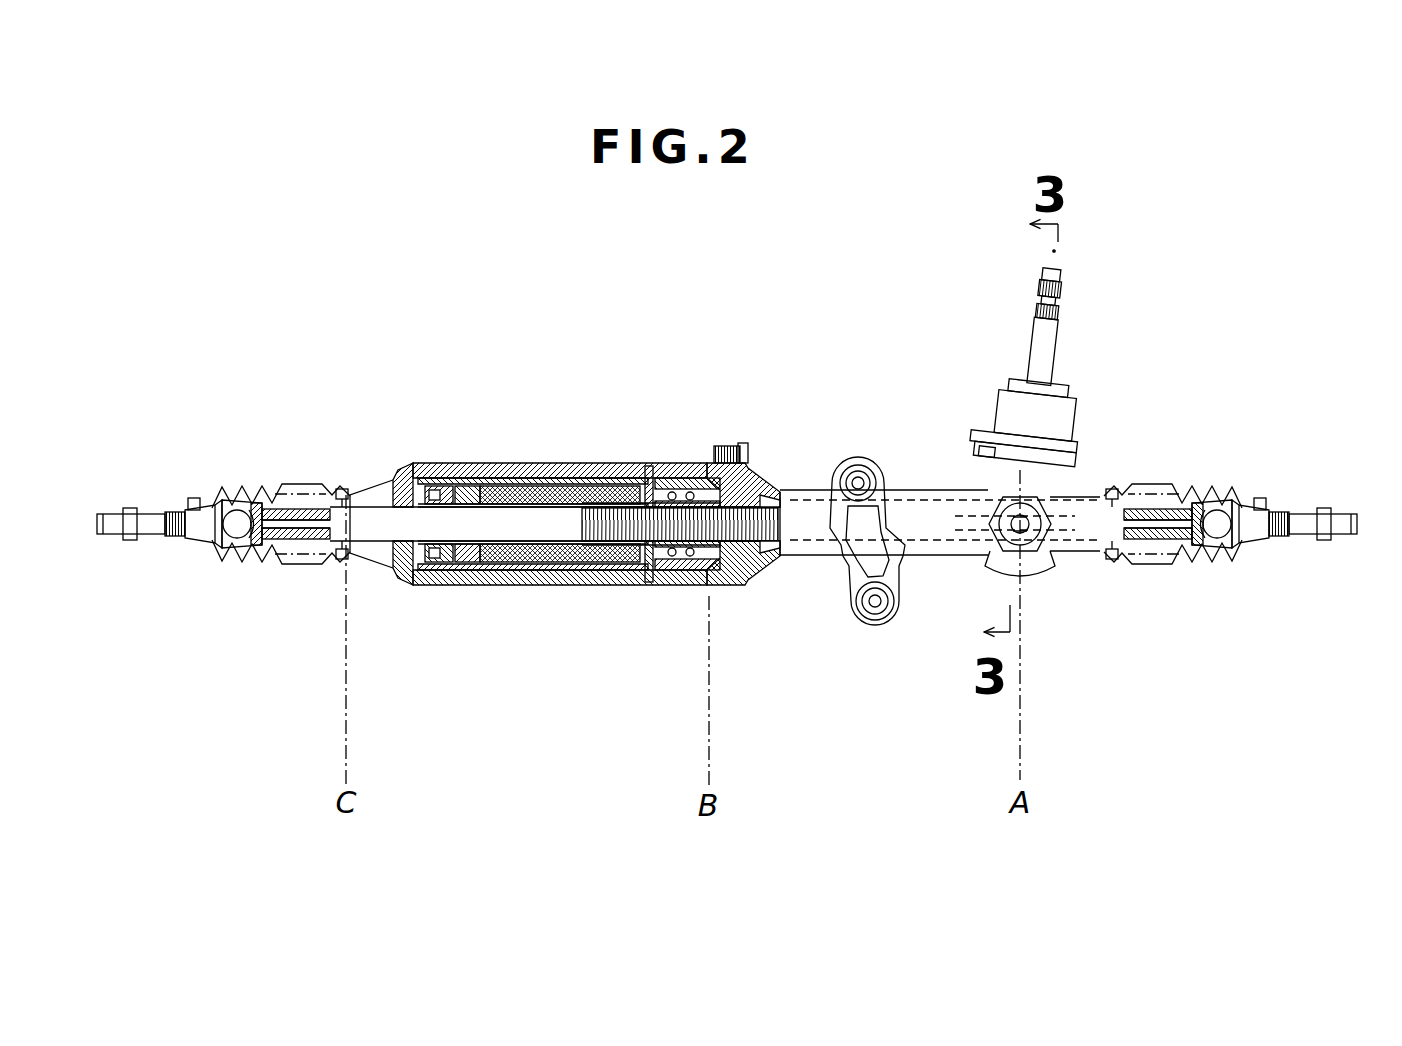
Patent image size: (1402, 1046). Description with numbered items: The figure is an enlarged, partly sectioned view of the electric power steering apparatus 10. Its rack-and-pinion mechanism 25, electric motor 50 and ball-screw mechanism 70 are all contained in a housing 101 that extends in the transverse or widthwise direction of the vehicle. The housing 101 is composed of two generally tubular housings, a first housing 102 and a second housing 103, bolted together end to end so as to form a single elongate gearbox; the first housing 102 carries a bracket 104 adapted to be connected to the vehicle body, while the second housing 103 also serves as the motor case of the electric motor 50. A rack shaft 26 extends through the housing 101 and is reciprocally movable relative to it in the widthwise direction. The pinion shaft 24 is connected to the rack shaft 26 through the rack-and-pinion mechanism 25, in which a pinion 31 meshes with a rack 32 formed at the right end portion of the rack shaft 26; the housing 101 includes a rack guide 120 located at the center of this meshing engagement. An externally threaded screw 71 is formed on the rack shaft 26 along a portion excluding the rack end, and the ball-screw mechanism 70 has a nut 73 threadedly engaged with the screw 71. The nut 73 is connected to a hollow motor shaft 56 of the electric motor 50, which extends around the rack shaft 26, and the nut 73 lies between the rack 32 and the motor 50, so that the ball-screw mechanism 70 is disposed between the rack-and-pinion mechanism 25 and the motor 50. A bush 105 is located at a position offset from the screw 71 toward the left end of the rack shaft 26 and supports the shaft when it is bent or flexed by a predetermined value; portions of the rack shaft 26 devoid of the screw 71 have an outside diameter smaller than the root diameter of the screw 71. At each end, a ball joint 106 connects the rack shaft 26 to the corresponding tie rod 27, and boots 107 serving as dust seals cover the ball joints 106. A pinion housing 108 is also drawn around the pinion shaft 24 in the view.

The electric power steering apparatus 10 is at (308, 204).
The pinion shaft 24 is at (1052, 325).
The rack-and-pinion mechanism 25 is at (985, 560).
The rack shaft 26 is at (375, 510).
The tie rod 27 is at (118, 540).
The pinion 31 is at (996, 505).
The rack 32 is at (983, 540).
The electric motor 50 is at (520, 592).
The hollow motor shaft 56 is at (556, 578).
The ball-screw mechanism 70 is at (750, 582).
The screw 71 is at (622, 590).
The nut 73 is at (753, 590).
The housing 101 is at (802, 328).
The first housing 102 is at (766, 468).
The second housing 103 is at (650, 468).
The bracket 104 is at (855, 447).
The bush 105 is at (340, 488).
The ball joint 106 is at (245, 560).
The boot 107 is at (213, 560).
The pinion housing 108 is at (1075, 416).
The rack guide 120 is at (1048, 560).